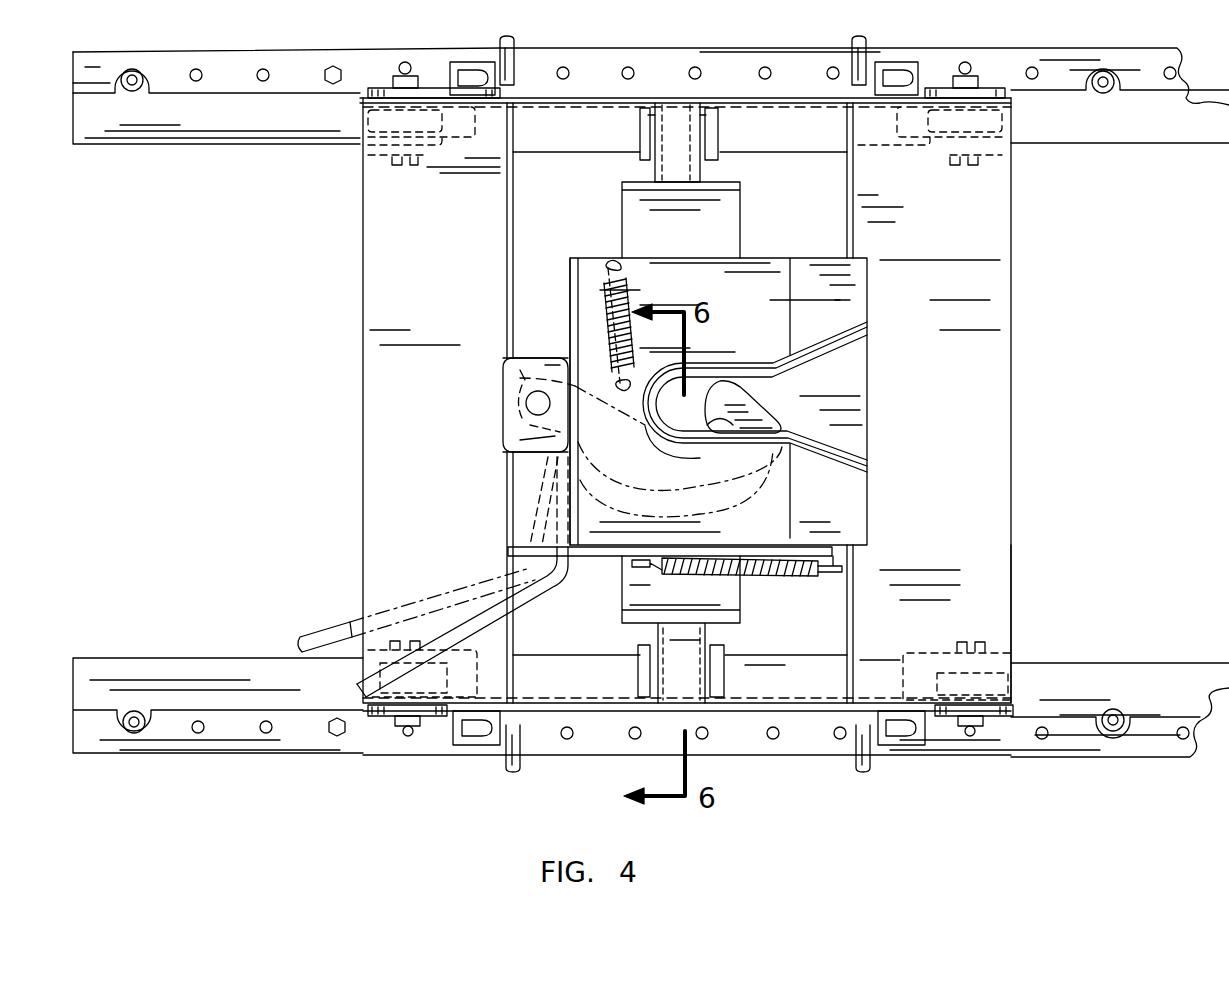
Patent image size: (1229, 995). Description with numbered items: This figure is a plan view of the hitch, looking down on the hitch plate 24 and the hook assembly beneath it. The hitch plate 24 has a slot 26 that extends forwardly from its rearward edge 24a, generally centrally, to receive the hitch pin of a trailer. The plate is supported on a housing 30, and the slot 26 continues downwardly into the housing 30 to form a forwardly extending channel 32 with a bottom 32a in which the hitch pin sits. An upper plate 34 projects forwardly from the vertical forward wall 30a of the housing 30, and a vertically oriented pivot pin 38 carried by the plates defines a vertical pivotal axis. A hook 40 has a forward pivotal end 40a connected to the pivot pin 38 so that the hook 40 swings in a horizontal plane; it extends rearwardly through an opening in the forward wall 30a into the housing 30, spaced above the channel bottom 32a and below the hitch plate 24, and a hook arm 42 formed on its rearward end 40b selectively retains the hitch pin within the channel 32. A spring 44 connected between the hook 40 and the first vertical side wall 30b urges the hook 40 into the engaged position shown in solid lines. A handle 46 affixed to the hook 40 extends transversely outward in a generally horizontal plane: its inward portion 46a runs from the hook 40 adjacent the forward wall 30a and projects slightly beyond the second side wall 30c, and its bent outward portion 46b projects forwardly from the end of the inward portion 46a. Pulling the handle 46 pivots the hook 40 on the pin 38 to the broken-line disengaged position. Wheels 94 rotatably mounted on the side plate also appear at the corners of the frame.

The hitch plate 24 is at (855, 300).
The rearward edge 24a is at (870, 508).
The slot 26 is at (748, 370).
The housing 30 is at (598, 256).
The forward wall 30a is at (570, 312).
The first vertical side wall 30b is at (705, 258).
The second side wall 30c is at (795, 576).
The channel 32 is at (862, 352).
The channel bottom 32a is at (850, 400).
The upper plate 34 is at (508, 425).
The pivot pin 38 is at (526, 403).
The hook 40 is at (768, 424).
The forward pivotal end 40a is at (520, 378).
The rearward end 40b is at (755, 410).
The hook arm 42 is at (752, 395).
The spring 44 is at (604, 292).
The handle 46 is at (540, 592).
The inward portion 46a is at (565, 513).
The outward portion 46b is at (388, 702).
The wheel 94 is at (1000, 690).